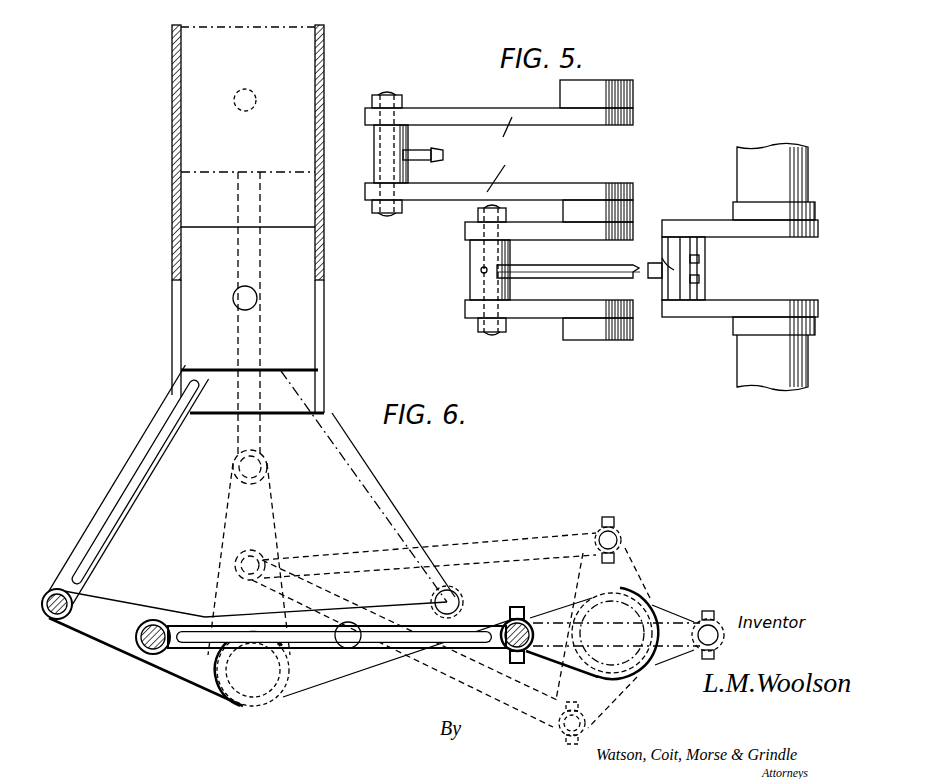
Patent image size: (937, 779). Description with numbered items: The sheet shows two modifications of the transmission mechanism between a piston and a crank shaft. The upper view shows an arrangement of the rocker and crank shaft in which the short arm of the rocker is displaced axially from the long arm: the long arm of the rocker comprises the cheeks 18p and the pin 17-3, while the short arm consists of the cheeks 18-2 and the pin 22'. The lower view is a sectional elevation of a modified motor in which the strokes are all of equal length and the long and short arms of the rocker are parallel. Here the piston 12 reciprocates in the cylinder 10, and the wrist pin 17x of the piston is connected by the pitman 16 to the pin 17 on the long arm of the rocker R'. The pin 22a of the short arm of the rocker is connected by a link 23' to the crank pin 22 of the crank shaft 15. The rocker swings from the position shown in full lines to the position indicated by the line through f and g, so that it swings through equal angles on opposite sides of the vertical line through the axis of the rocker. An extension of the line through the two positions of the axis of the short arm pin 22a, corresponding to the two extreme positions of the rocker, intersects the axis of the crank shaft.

In FIG. 6, the cylinder 10 is at (172, 130).
In FIG. 6, the piston 12 is at (190, 245).
In FIG. 6, the wrist pin 17x is at (257, 298).
In FIG. 6, the pitman 16 is at (160, 446).
In FIG. 6, the pin of the long arm of the rocker 17 is at (52, 598).
In FIG. 6, the rocker R' is at (279, 648).
In FIG. 6, the pin of the short arm of the rocker 22a is at (156, 628).
In FIG. 6, the line fg f is at (252, 669).
In FIG. 6, the link 23' is at (337, 665).
In FIG. 6, the line fg g is at (450, 608).
In FIG. 6, the crank pin 22 is at (519, 622).
In FIG. 6, the crank shaft 15 is at (645, 606).
In FIG. 5, the pin 17-3 is at (499, 148).
In FIG. 5, the cheeks 18p is at (510, 154).
In FIG. 5, the cheeks 18-2 is at (533, 228).
In FIG. 5, the pin 22' is at (452, 298).